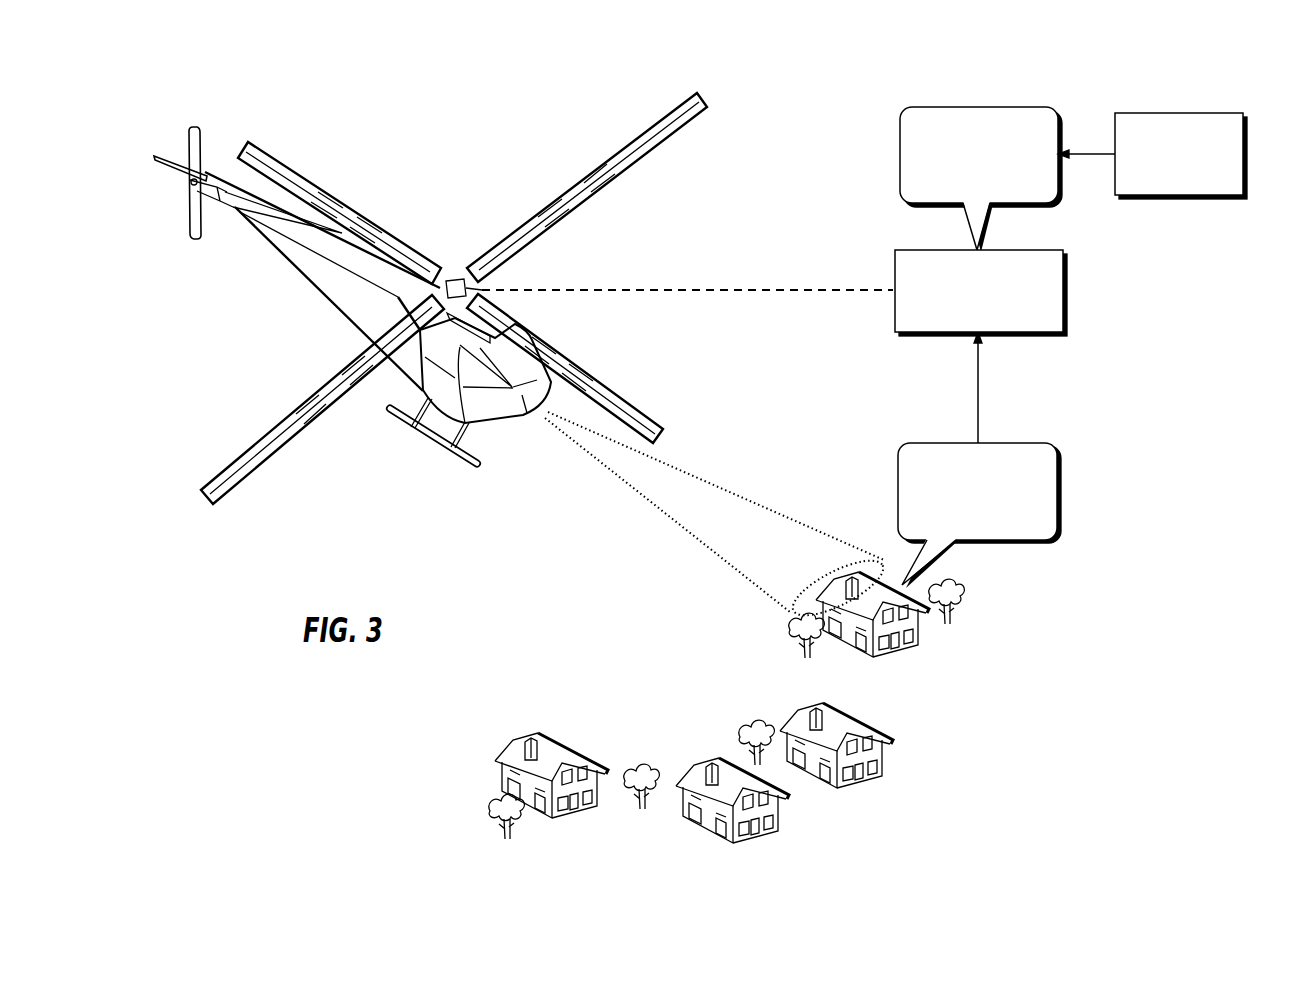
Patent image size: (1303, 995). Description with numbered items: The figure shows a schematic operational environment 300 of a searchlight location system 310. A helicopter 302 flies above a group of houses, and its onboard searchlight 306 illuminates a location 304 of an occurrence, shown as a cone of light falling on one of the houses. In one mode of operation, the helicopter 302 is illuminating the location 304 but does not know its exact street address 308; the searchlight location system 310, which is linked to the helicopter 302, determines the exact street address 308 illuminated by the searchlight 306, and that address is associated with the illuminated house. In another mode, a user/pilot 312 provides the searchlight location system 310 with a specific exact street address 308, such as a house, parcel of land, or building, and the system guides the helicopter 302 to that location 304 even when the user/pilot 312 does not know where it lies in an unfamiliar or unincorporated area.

The operational environment 300 is at (458, 100).
The helicopter 302 is at (318, 298).
The location 304 is at (925, 632).
The searchlight 306 is at (702, 521).
The exact street address 308 is at (927, 106).
The searchlight location system 310 is at (893, 262).
The user/pilot 312 is at (1138, 112).